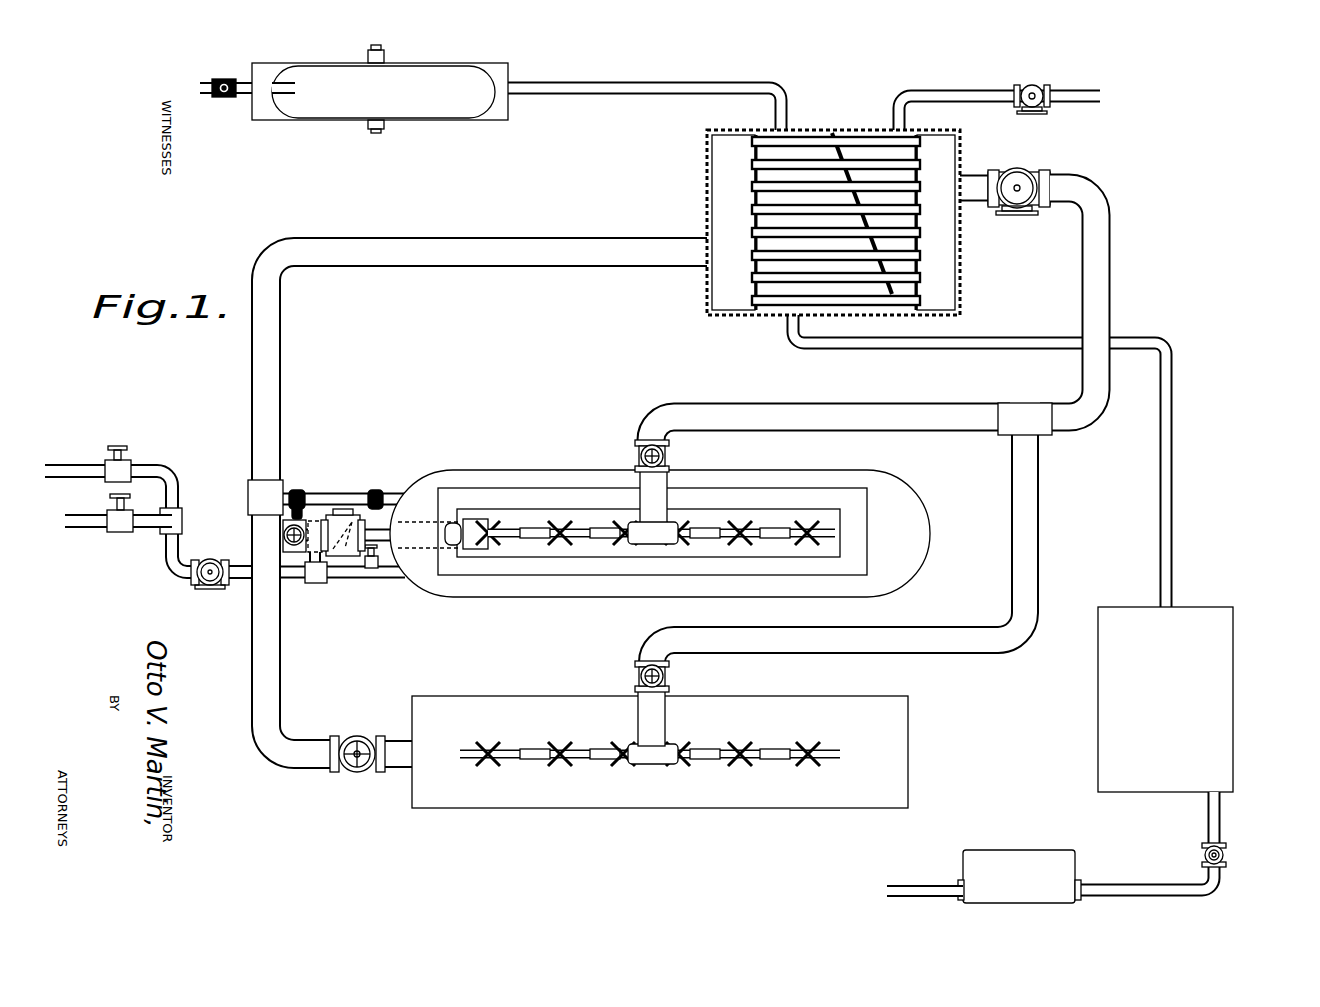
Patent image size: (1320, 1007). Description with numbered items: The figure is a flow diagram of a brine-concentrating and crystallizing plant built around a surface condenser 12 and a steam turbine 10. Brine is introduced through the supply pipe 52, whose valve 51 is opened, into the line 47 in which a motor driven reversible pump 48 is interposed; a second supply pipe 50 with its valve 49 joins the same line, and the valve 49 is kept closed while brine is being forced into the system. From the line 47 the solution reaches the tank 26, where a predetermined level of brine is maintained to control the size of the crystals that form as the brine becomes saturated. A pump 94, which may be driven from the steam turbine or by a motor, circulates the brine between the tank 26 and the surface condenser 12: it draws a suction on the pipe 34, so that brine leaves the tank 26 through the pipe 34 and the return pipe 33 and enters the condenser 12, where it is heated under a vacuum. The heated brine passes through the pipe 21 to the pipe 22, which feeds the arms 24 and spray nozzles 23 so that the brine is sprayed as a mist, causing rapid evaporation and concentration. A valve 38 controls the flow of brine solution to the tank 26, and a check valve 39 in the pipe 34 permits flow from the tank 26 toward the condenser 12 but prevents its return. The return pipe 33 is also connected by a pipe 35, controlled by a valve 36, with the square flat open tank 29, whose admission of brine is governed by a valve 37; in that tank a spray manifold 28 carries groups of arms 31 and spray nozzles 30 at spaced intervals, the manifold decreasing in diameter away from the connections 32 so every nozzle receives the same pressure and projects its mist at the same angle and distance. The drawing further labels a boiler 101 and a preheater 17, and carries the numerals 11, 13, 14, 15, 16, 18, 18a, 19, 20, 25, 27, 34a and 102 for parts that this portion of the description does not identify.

The steam turbine 10 is at (440, 116).
The exhaust pipe from turbine to condenser 11 is at (640, 85).
The surface condenser 12 is at (825, 130).
The valve on pipe 14 13 is at (1036, 90).
The pipe from condenser 14 is at (944, 92).
The condenser tubes and baffle 15 is at (858, 182).
The pipe from condenser to preheater 16 is at (1016, 344).
The preheater 17 is at (1214, 700).
The valve between preheater and boiler 18 is at (1226, 851).
The steam supply pipe valve 18a is at (246, 96).
The condenser right header 19 is at (944, 266).
The condenser left header 20 is at (700, 298).
The pipe 21 is at (1092, 303).
The pipe 22 is at (663, 520).
The spray nozzles 23 is at (748, 532).
The arms 24 is at (742, 522).
The pipe from tee to valve 38 25 is at (830, 428).
The tank 26 is at (858, 516).
The pipe from tee to storage tank 27 is at (1038, 517).
The spray manifold 28 is at (748, 700).
The open tank 29 is at (906, 740).
The spray nozzles 30 is at (752, 752).
The arms 31 is at (746, 746).
The connections 32 is at (640, 714).
The return pipe 33 is at (485, 258).
The pipe 34 is at (366, 527).
The sprayer 34a is at (470, 550).
The pipe 35 is at (302, 734).
The valve 36 is at (352, 774).
The valve 37 is at (636, 674).
The valve 38 is at (640, 450).
The check valve 39 is at (344, 566).
The pipe 47 is at (290, 576).
The motor driven reversible pump 48 is at (198, 590).
The valve 49 is at (121, 534).
The supply pipe 50 is at (84, 528).
The valve 51 is at (128, 454).
The supply pipe 52 is at (180, 480).
The pump 94 is at (1024, 184).
The boiler 101 is at (1066, 860).
The valve 102 is at (284, 532).